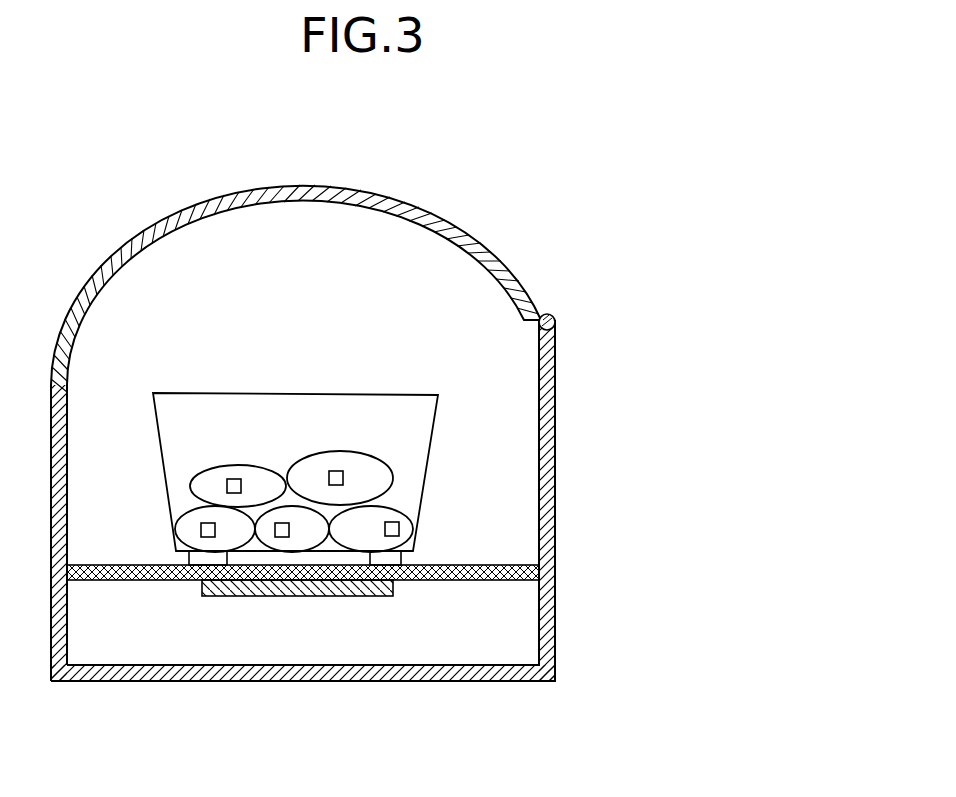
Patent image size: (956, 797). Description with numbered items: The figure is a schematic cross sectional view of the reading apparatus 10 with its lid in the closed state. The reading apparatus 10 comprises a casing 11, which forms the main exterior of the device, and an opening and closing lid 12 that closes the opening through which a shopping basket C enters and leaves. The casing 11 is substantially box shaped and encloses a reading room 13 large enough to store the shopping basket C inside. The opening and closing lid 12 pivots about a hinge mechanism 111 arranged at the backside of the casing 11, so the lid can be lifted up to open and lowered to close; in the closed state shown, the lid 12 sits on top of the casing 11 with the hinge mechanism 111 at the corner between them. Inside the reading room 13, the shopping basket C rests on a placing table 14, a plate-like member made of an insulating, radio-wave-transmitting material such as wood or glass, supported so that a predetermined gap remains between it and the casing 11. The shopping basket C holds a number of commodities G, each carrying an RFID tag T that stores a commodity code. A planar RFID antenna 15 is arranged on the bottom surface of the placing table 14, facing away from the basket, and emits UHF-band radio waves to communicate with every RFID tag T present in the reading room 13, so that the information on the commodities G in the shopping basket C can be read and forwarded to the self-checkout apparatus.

The reading apparatus 10 is at (597, 191).
The casing 11 is at (556, 640).
The opening and closing lid 12 is at (263, 188).
The hinge mechanism 111 is at (556, 323).
The reading room 13 is at (488, 481).
The placing table 14 is at (120, 581).
The RFID antenna 15 is at (222, 597).
The shopping basket C is at (420, 428).
The commodity G is at (250, 467).
The RFID tag T is at (338, 471).